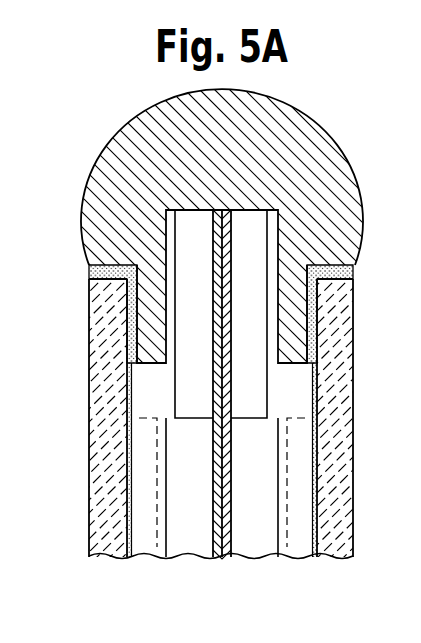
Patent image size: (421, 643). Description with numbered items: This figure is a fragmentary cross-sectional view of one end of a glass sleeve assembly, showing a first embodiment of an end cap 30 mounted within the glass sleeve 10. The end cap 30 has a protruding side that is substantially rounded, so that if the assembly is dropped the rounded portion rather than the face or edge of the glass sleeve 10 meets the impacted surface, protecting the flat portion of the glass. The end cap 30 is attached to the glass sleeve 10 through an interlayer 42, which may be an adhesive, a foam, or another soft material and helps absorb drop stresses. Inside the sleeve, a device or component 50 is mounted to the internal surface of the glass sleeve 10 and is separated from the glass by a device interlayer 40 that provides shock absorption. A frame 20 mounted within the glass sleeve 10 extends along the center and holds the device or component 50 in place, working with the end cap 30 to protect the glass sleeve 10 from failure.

The end cap 30 is at (310, 157).
The interlayer 42 is at (130, 316).
The glass sleeve 10 is at (100, 400).
The device interlayer 40 is at (130, 432).
The device or component 50 is at (140, 466).
The frame 20 is at (213, 508).